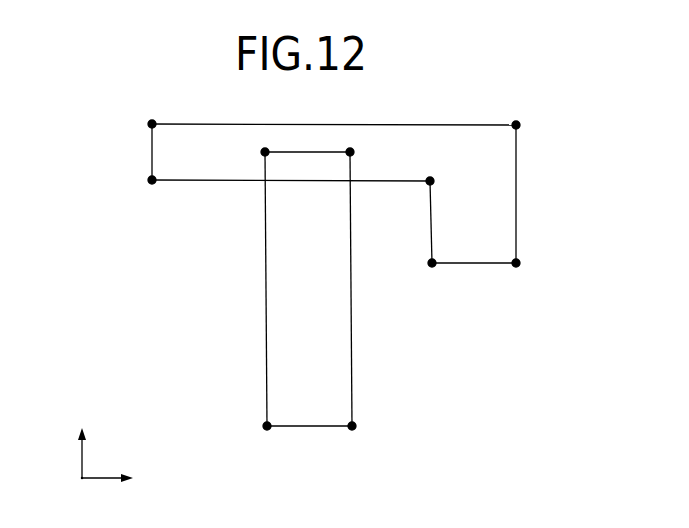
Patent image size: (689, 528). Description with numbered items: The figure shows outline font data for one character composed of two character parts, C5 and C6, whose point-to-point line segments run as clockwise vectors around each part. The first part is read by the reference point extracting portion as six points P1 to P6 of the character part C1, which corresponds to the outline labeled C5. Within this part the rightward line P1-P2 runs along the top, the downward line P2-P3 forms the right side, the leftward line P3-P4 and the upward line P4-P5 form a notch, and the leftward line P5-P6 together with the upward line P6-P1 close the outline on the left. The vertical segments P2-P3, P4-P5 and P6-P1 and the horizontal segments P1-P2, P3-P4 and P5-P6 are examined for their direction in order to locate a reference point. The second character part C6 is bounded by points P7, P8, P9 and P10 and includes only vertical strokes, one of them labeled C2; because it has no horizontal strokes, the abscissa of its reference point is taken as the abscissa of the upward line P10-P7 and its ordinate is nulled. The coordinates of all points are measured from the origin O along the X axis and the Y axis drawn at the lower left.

The point P1 is at (150, 111).
The point P2 is at (516, 113).
The point P3 is at (518, 278).
The point P4 is at (433, 278).
The point P5 is at (431, 169).
The point P6 is at (155, 194).
The point P7 is at (247, 149).
The point P8 is at (368, 152).
The point P9 is at (353, 442).
The point P10 is at (267, 442).
The character part C1 is at (539, 194).
The character part C2 is at (374, 289).
The character part C5 is at (462, 222).
The character part C6 is at (295, 289).
The origin O is at (72, 492).
The X axis X is at (112, 490).
The Y axis Y is at (73, 445).